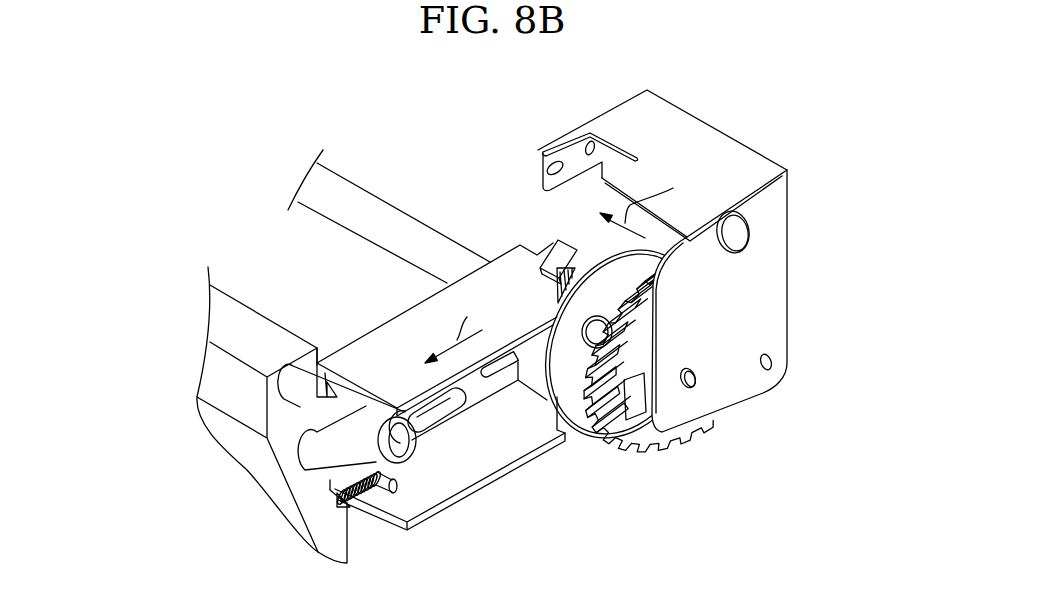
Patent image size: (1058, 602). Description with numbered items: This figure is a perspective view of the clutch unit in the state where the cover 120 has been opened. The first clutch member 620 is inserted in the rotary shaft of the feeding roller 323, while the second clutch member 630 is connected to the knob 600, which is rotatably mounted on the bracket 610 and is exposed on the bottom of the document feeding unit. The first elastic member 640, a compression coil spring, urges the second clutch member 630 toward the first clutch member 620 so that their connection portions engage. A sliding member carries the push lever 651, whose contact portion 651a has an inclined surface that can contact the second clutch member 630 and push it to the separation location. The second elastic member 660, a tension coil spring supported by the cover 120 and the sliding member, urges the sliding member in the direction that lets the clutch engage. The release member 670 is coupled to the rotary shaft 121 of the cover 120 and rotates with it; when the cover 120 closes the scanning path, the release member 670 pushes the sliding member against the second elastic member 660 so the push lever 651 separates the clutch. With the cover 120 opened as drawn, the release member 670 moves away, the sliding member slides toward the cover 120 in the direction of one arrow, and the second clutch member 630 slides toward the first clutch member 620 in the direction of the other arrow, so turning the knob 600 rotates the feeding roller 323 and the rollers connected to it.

The feeding roller 323 is at (375, 205).
The cover 120 is at (252, 328).
The rotary shaft 121 is at (293, 393).
The release member 670 is at (312, 458).
The second elastic member 660 is at (348, 505).
The first elastic member 640 is at (547, 398).
The push lever 651 is at (450, 502).
The contact portion 651a is at (567, 442).
The second clutch member 630 is at (572, 417).
The knob 600 is at (647, 450).
The bracket 610 is at (725, 405).
The first clutch member 620 is at (573, 267).